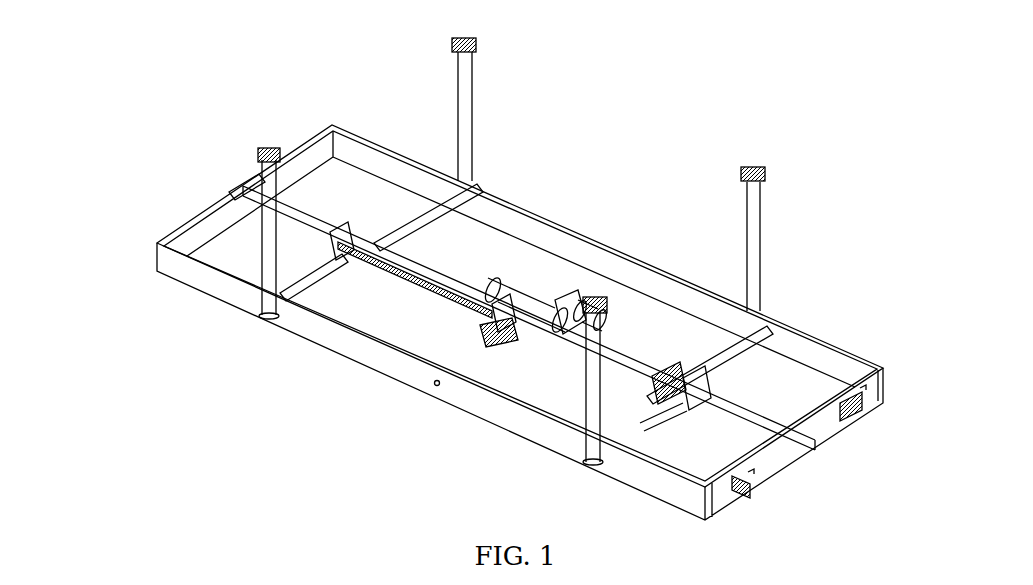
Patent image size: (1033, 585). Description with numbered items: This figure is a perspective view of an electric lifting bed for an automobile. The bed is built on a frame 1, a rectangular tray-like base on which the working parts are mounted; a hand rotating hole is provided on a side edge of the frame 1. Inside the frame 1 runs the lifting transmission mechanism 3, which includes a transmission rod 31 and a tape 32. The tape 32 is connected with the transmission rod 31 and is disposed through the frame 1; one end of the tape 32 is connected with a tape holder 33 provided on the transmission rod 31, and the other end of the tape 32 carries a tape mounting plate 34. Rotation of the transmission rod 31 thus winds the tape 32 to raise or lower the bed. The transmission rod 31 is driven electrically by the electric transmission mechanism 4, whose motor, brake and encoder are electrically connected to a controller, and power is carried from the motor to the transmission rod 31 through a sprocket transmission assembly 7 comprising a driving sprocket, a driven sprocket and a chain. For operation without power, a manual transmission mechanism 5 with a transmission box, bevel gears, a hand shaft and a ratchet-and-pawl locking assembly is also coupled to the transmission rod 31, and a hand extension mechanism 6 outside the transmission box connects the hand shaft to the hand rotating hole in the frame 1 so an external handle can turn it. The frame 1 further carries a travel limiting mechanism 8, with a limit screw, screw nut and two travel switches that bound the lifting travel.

The frame 1 is at (210, 213).
The lifting transmission mechanism 3 is at (735, 400).
The transmission rod 31 is at (687, 343).
The tape 32 is at (755, 230).
The tape holder 33 is at (705, 372).
The tape mounting plate 34 is at (752, 173).
The electric transmission mechanism 4 is at (537, 280).
The manual transmission mechanism 5 is at (503, 322).
The hand extension mechanism 6 is at (495, 347).
The sprocket transmission assembly 7 is at (590, 290).
The travel limiting mechanism 8 is at (433, 257).